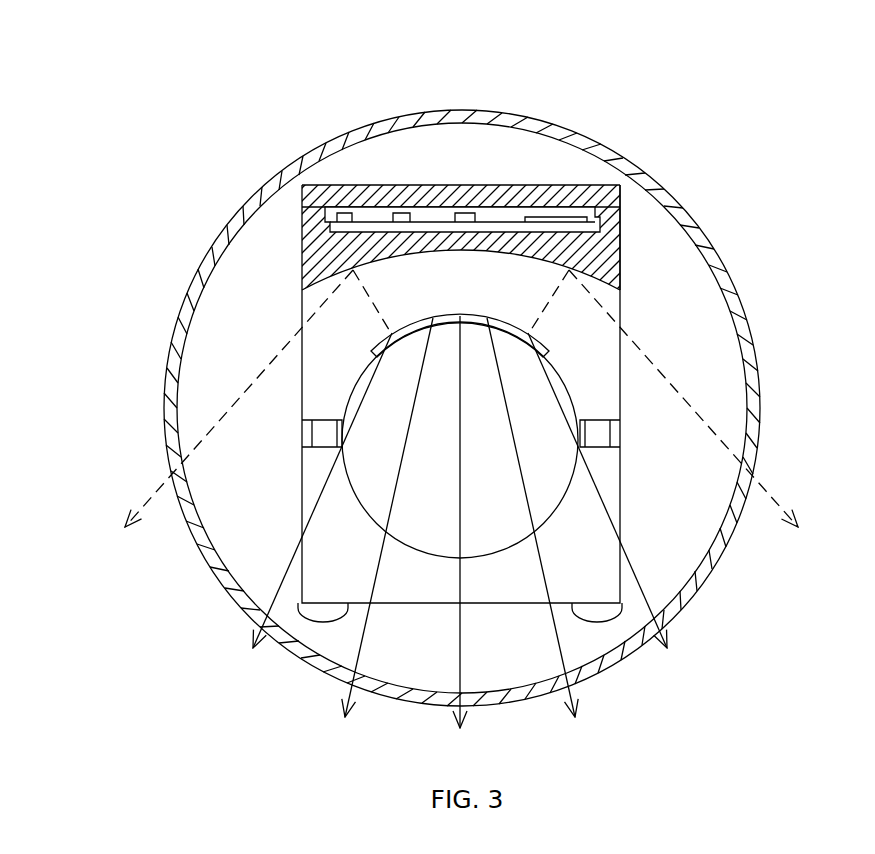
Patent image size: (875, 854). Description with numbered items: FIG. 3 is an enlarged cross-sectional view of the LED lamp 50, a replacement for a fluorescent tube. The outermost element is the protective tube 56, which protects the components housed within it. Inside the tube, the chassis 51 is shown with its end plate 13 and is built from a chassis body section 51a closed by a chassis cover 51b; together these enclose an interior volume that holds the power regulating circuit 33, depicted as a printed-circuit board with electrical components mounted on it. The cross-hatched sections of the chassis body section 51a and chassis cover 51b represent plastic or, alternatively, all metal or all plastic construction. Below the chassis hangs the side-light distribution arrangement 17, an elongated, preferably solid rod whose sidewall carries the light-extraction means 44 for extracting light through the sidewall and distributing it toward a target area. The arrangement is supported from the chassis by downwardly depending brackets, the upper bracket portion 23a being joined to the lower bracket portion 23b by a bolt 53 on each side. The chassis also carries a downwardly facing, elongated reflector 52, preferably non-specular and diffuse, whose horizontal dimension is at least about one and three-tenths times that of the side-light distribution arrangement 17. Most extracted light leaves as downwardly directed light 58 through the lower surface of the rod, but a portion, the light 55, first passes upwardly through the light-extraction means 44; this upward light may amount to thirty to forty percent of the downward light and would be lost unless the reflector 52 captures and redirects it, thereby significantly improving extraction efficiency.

The lamp 50 is at (198, 204).
The chassis 51 is at (468, 166).
The chassis body section 51a is at (622, 240).
The chassis cover 51b is at (492, 185).
The reflector 52 is at (323, 278).
The power regulating circuit 33 is at (360, 222).
The end plate 13 is at (234, 336).
The side-light distribution arrangement 17 is at (456, 455).
The upper bracket portion 23a is at (566, 371).
The lower bracket portion 23b is at (568, 591).
The light-extraction means 44 is at (497, 318).
The bolt 53 is at (308, 433).
The light 55 is at (461, 415).
The protective tube 56 is at (182, 318).
The downwardly directed light 58 is at (468, 540).